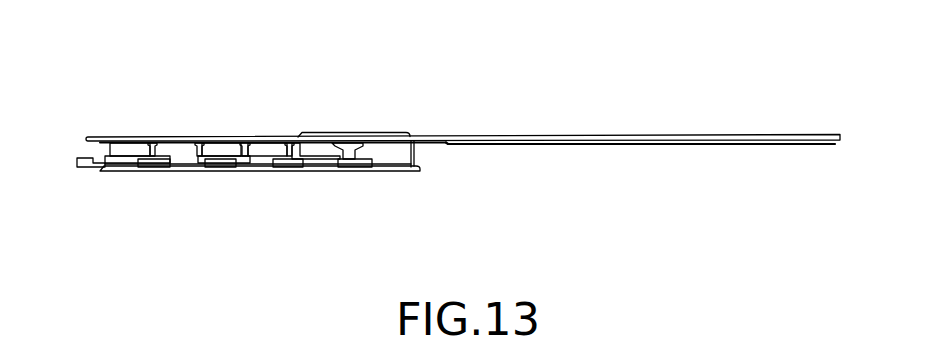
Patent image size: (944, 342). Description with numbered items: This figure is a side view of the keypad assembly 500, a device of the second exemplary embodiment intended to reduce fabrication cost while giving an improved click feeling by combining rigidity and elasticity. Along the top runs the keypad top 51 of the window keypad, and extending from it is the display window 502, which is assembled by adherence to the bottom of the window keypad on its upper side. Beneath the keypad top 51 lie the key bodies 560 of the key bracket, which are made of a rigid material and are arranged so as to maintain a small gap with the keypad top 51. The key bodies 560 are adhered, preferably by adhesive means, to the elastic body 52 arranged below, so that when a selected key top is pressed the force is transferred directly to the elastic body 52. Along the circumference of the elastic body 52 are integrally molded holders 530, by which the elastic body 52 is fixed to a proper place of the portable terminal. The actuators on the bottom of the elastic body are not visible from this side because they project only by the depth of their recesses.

The keypad assembly 500 is at (479, 49).
The keypad top 51 is at (222, 136).
The elastic body 52 is at (257, 166).
The display window 502 is at (633, 147).
The holder 530 is at (357, 164).
The key body 560 is at (188, 152).